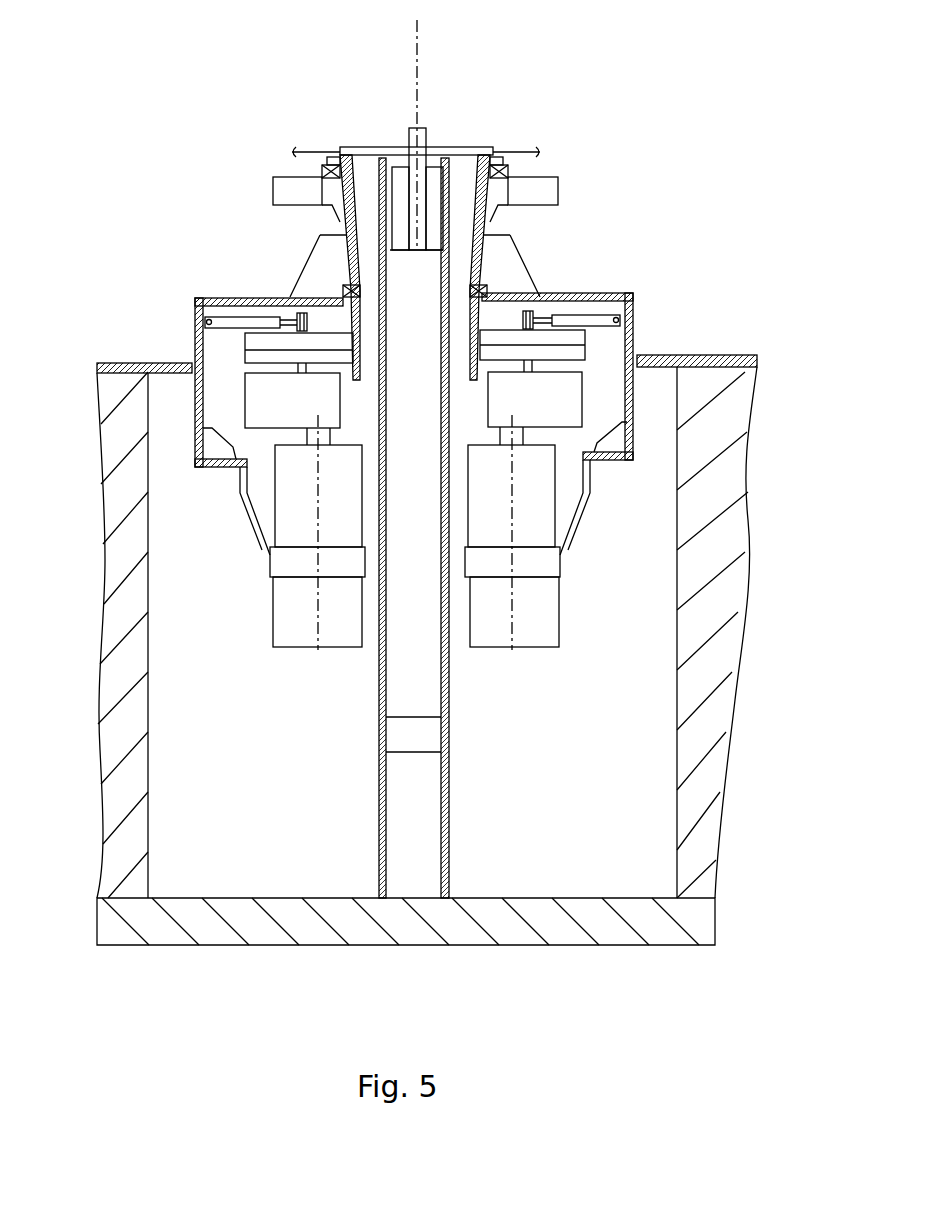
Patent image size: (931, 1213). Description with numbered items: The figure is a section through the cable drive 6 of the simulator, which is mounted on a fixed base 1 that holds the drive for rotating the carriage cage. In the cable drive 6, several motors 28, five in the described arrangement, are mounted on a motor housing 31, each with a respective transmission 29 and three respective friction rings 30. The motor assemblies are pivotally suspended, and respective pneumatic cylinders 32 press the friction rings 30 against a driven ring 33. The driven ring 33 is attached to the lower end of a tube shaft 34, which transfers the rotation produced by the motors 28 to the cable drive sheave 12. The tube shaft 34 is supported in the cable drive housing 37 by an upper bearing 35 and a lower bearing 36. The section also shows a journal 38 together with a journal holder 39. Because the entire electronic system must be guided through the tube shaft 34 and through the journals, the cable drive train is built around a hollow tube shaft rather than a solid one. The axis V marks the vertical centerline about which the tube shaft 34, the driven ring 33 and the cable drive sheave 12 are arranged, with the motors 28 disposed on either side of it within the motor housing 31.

The fixed base 1 is at (690, 795).
The cable drive 6 is at (292, 668).
The cable drive sheave 12 is at (515, 148).
The motor 28 is at (298, 605).
The transmission 29 is at (552, 393).
The friction ring 30 is at (280, 347).
The motor housing 31 is at (187, 445).
The pneumatic cylinder 32 is at (195, 300).
The driven ring 33 is at (480, 318).
The tube shaft 34 is at (482, 228).
The upper bearing 35 is at (508, 168).
The lower bearing 36 is at (490, 290).
The cable drive housing 37 is at (503, 193).
The journal 38 is at (435, 185).
The journal holder 39 is at (448, 812).
The vertical axis V is at (420, 62).